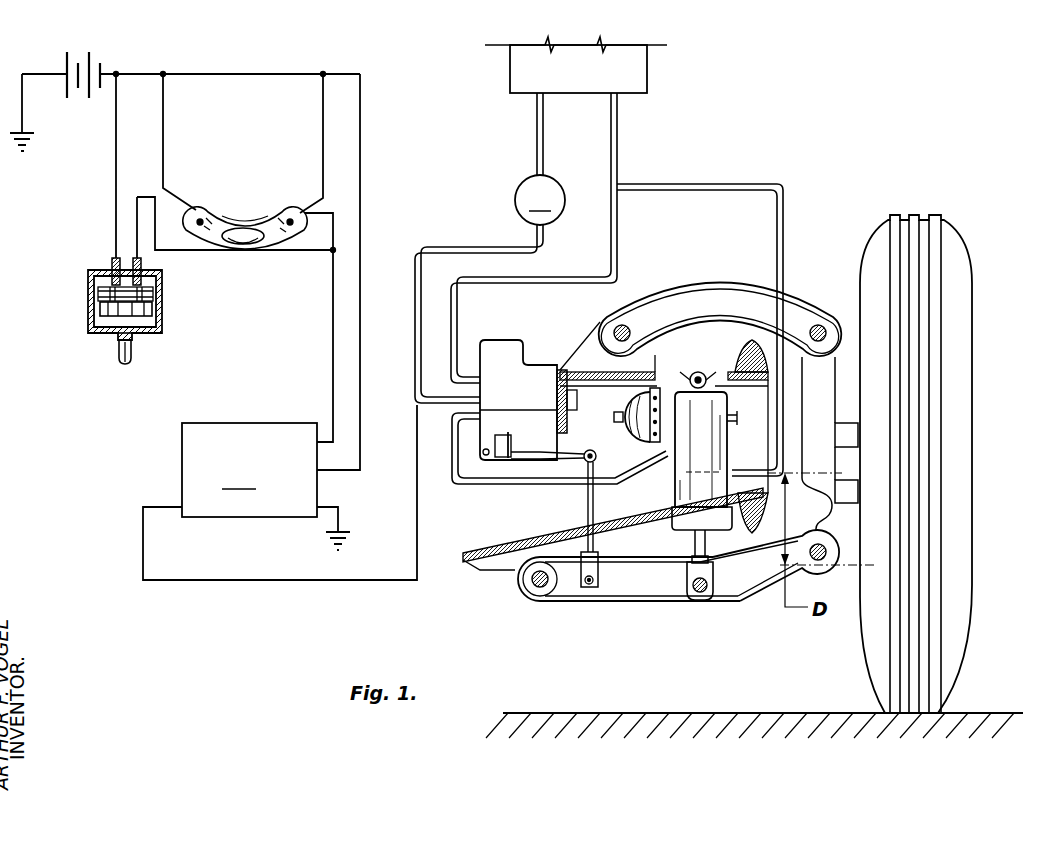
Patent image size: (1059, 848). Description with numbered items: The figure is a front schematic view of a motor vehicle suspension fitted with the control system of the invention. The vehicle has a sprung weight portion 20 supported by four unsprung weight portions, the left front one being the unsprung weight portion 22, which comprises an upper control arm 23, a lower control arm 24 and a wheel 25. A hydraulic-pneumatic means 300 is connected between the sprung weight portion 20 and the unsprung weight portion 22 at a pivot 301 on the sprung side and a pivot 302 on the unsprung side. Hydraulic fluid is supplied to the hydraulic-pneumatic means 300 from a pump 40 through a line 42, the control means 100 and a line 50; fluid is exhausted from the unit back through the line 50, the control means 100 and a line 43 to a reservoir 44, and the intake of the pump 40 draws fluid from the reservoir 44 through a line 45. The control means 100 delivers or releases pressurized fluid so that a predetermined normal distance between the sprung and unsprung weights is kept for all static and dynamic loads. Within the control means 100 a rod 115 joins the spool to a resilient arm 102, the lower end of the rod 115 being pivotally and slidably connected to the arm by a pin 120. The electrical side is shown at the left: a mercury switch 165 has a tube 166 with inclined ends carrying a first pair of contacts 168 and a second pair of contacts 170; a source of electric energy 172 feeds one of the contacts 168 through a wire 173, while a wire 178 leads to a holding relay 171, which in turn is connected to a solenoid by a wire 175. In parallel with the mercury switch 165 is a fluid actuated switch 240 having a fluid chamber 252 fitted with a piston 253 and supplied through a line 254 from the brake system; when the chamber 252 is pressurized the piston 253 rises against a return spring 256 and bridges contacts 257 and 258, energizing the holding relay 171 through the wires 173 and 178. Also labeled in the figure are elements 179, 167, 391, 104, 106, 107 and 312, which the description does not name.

The source of electric energy 172 is at (66, 63).
The wire 173 is at (140, 73).
The conductor wire 179 is at (360, 162).
The mercury switch 165 is at (216, 205).
The second pair of contacts 170 is at (200, 213).
The tube 166 is at (244, 220).
The first pair of contacts 168 is at (287, 210).
The pivot ball 167 is at (240, 243).
The wire 178 is at (260, 253).
The contact 257 is at (110, 260).
The contact 258 is at (142, 262).
The return spring 256 is at (100, 290).
The piston 253 is at (105, 310).
The fluid chamber 252 is at (158, 322).
The line 254 is at (118, 350).
The fluid actuated switch 240 is at (150, 342).
The holding relay 171 is at (266, 486).
The wire 175 is at (268, 582).
The reservoir 44 is at (640, 82).
The line 45 is at (537, 131).
The pump 40 is at (540, 200).
The line 42 is at (414, 312).
The line 43 is at (614, 238).
The fluid line 391 is at (783, 262).
The control means 100 is at (536, 346).
The resilient arm 102 is at (553, 451).
The rod 115 is at (533, 422).
The pin 120 is at (508, 463).
The pivot joint 106 is at (597, 456).
The vertical link rod 104 is at (588, 490).
The line 50 is at (460, 485).
The sprung weight portion 20 is at (466, 508).
The upper control arm 23 is at (717, 292).
The pivot 301 is at (700, 373).
The hydraulic-pneumatic means 300 is at (667, 382).
The piston rod 312 is at (690, 555).
The pivot 302 is at (700, 600).
The lower control arm 24 is at (617, 592).
The left front unsprung weight portion 22 is at (746, 608).
The clevis pivot 107 is at (582, 584).
The wheel 25 is at (958, 262).